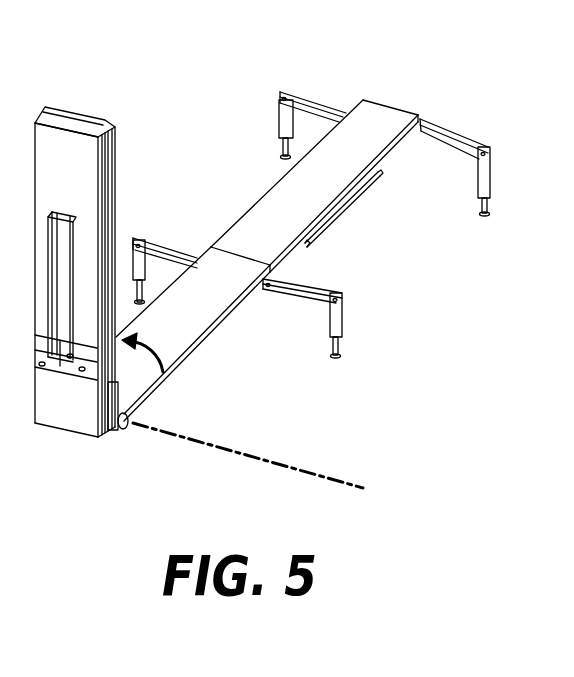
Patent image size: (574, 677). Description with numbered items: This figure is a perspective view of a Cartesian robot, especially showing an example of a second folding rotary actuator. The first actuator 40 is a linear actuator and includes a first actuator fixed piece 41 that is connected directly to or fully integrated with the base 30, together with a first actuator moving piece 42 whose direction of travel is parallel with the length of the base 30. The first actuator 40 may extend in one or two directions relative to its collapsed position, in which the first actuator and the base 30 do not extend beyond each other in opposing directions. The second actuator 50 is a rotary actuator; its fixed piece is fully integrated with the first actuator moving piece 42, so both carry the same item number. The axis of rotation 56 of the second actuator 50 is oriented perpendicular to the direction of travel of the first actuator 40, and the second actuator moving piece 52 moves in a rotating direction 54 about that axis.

The base 30 is at (343, 207).
The first actuator 40 is at (303, 219).
The first actuator fixed piece 41 is at (375, 117).
The first actuator moving piece / second actuator fixed piece 42 is at (192, 287).
The second actuator 50 is at (118, 413).
The second actuator moving piece 52 is at (132, 413).
The rotating direction 54 is at (163, 372).
The axis of rotation 56 is at (270, 463).